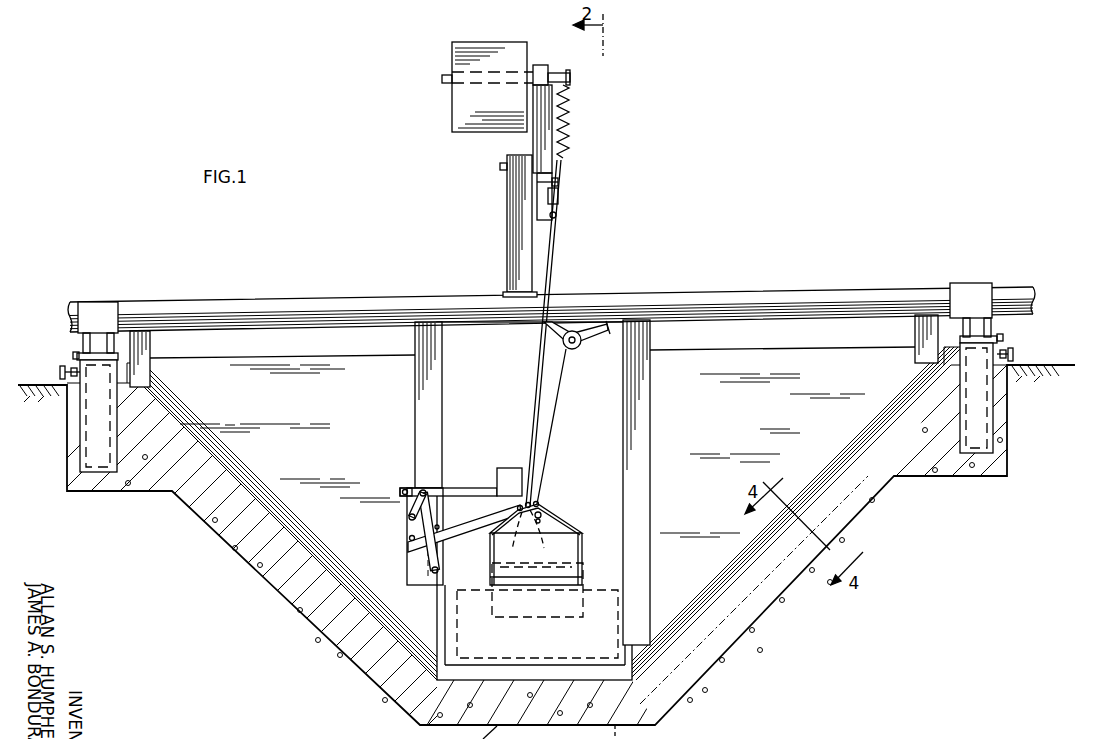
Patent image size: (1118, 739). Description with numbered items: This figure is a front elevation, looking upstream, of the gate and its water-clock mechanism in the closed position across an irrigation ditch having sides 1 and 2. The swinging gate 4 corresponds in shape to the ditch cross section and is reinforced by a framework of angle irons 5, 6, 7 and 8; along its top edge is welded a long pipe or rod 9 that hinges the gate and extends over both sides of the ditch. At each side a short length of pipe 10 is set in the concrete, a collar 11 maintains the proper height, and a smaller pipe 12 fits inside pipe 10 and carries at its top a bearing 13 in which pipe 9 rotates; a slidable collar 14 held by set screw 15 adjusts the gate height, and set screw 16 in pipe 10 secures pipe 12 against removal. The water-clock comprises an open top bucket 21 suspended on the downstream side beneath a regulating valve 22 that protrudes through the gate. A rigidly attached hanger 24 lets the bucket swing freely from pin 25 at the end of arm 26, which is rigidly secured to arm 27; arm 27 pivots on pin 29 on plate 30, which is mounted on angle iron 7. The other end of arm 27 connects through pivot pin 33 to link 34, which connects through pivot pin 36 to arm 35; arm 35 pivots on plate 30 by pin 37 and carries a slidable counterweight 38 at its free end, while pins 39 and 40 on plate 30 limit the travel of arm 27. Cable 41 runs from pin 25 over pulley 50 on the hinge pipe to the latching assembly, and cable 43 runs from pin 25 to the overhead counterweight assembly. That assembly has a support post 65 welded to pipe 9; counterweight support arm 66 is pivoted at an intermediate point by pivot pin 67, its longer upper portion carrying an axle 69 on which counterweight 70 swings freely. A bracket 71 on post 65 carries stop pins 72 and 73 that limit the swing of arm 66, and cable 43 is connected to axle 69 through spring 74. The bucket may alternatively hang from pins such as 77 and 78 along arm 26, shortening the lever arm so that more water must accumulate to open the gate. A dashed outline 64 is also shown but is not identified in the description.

The ditch side 1 is at (270, 572).
The ditch side 2 is at (866, 497).
The swinging gate 4 is at (321, 452).
The angle iron 5 is at (836, 452).
The angle iron 6 is at (646, 440).
The angle iron 7 is at (415, 452).
The angle iron 8 is at (254, 474).
The hinge pipe 9 is at (922, 289).
The short pipe 10 is at (80, 452).
The collar 11 is at (48, 392).
The inner pipe 12 is at (75, 334).
The bearing 13 is at (100, 302).
The slidable collar 14 is at (78, 353).
The set screw 15 is at (73, 355).
The set screw 16 is at (58, 371).
The bucket 21 is at (584, 588).
The regulating valve 22 is at (544, 514).
The hanger 24 is at (580, 522).
The pin 25 is at (540, 505).
The arm 26 is at (476, 545).
The arm 27 is at (422, 580).
The pin 29 is at (439, 571).
The plate 30 is at (420, 560).
The pivot pin 33 is at (406, 502).
The link 34 is at (404, 494).
The arm 35 is at (470, 488).
The pivot pin 36 is at (416, 484).
The pin 37 is at (418, 492).
The slidable counterweight 38 is at (505, 468).
The pin 39 is at (410, 538).
The pin 40 is at (436, 523).
The cable 41 is at (552, 416).
The cable 43 is at (541, 402).
The pulley 50 is at (575, 350).
The housing 64 is at (542, 662).
The support post 65 is at (507, 222).
The counterweight support arm 66 is at (533, 142).
The pivot pin 67 is at (500, 167).
The axle 69 is at (444, 74).
The counterweight 70 is at (503, 40).
The bracket 71 is at (558, 198).
The stop pin 72 is at (558, 183).
The stop pin 73 is at (556, 216).
The spring 74 is at (569, 133).
The pin 77 is at (548, 537).
The pin 78 is at (526, 538).